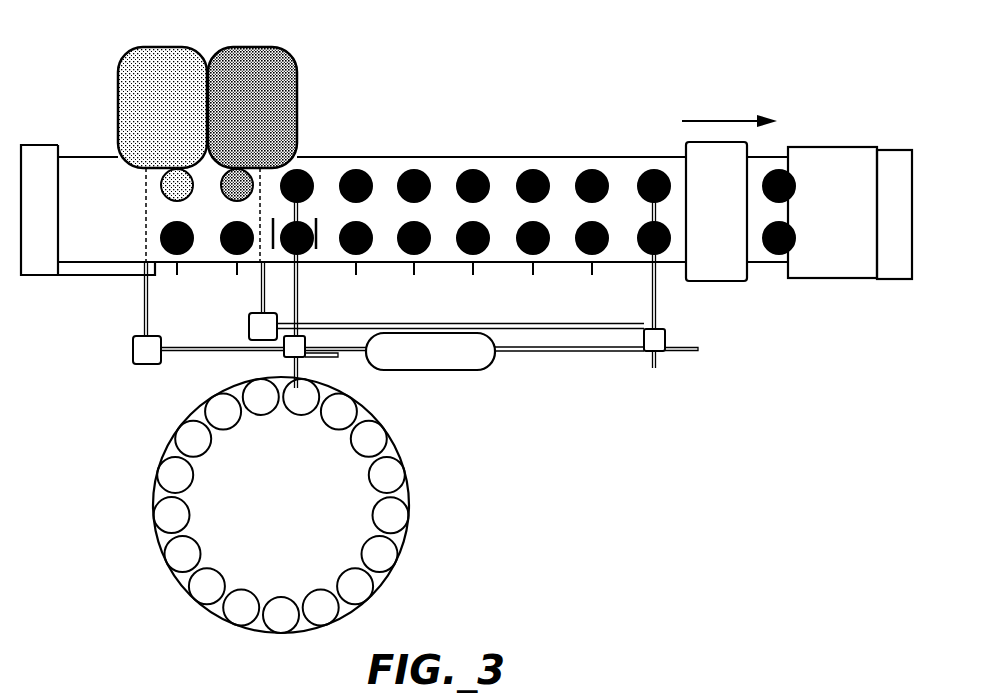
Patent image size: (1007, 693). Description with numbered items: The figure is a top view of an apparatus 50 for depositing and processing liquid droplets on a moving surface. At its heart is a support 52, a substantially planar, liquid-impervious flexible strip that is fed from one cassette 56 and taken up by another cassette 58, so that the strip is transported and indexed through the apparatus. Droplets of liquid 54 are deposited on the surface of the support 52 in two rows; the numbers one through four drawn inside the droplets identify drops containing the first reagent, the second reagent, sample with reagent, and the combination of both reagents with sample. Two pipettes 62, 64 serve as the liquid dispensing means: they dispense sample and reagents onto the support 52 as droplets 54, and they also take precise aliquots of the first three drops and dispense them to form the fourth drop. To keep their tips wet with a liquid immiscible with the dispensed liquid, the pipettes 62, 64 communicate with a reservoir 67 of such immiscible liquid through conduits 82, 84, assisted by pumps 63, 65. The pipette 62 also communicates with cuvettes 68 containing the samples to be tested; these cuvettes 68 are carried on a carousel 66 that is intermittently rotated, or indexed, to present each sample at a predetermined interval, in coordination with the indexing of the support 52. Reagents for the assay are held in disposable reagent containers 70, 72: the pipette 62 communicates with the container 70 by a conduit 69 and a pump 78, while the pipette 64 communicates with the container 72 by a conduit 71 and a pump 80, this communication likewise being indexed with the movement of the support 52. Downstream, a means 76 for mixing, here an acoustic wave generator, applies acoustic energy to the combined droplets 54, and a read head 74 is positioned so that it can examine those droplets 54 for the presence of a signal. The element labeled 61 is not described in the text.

The apparatus 50 is at (580, 539).
The support 52 is at (498, 250).
The droplets of liquid 54 is at (411, 170).
The cassette 56 is at (93, 281).
The cassette 58 is at (845, 282).
The connecting rod 61 is at (563, 323).
The pipette 62 is at (285, 362).
The pump 63 is at (320, 360).
The pipette 64 is at (667, 333).
The pump 65 is at (687, 353).
The carousel 66 is at (172, 576).
The reservoir 67 is at (460, 372).
The cuvettes 68 is at (158, 513).
The conduit 69 is at (135, 330).
The disposable reagent container 70 is at (133, 47).
The conduit 71 is at (261, 290).
The disposable reagent container 72 is at (281, 47).
The read head 74 is at (686, 152).
The means for mixing 76 is at (318, 238).
The pump 78 is at (145, 366).
The pump 80 is at (249, 333).
The conduit 82 is at (355, 325).
The conduit 84 is at (558, 352).